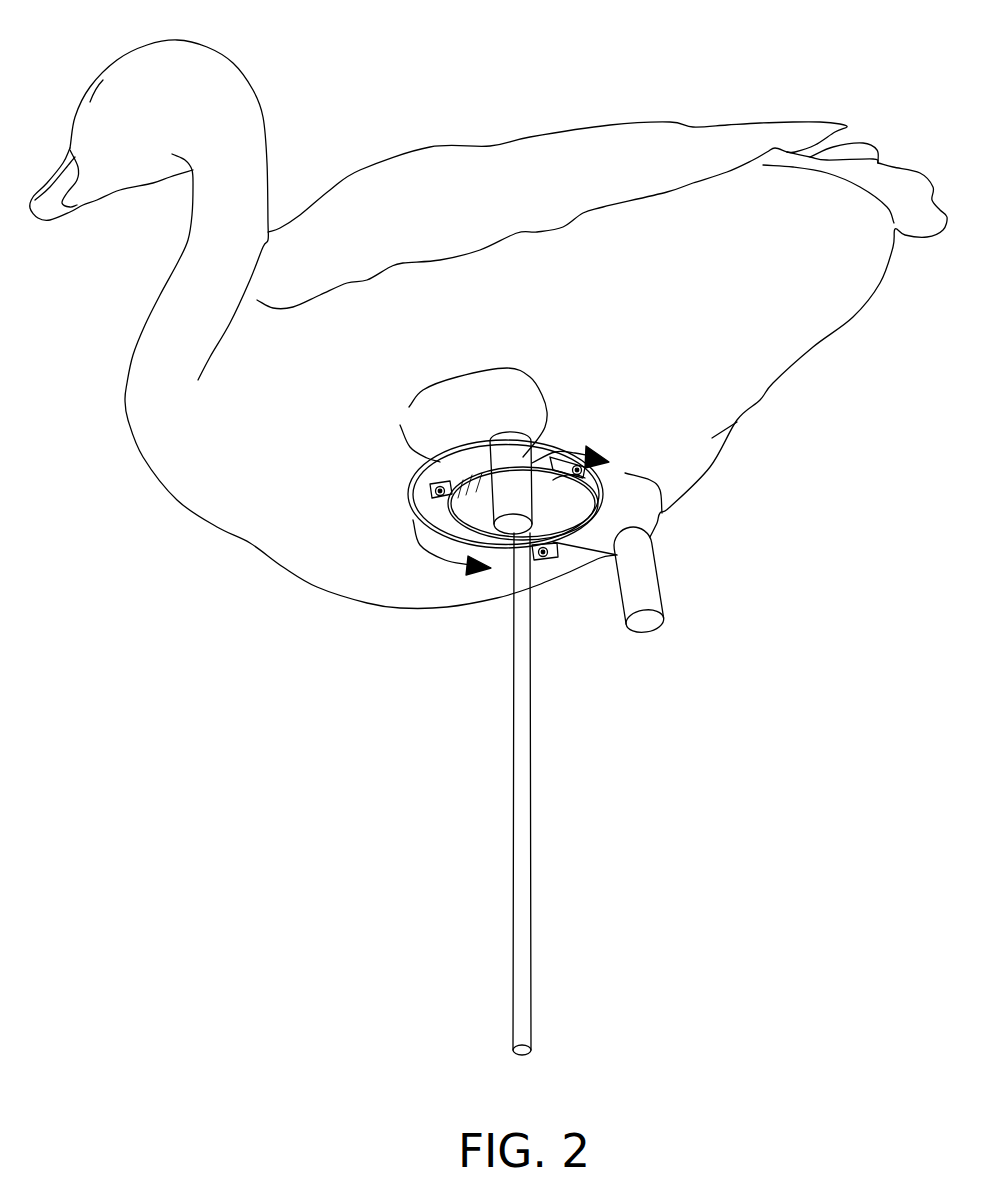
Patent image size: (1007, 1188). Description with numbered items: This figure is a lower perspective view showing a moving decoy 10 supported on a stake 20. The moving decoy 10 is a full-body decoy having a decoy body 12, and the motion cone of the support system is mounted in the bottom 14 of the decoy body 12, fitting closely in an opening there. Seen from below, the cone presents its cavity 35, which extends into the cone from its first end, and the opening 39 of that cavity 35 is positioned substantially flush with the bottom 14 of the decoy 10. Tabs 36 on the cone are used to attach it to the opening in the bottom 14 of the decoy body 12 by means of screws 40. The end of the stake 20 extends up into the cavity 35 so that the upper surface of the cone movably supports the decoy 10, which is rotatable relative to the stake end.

The moving decoy 10 is at (488, 337).
The decoy body 12 is at (682, 141).
The bottom of the decoy body 14 is at (400, 573).
The stake 20 is at (532, 843).
The cavity 35 is at (573, 497).
The tabs 36 is at (599, 482).
The opening 39 is at (413, 517).
The screws 40 is at (428, 488).